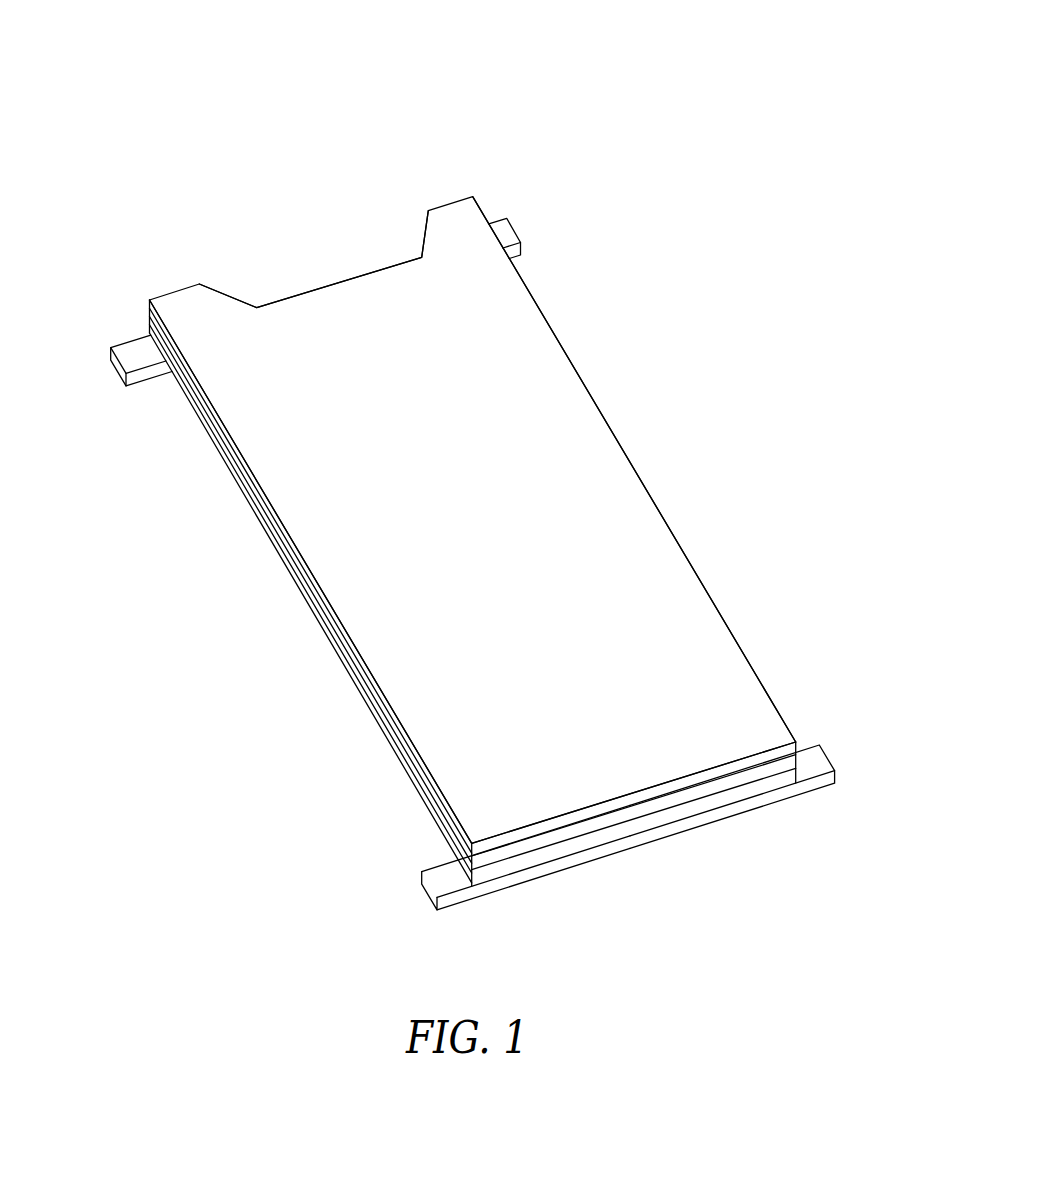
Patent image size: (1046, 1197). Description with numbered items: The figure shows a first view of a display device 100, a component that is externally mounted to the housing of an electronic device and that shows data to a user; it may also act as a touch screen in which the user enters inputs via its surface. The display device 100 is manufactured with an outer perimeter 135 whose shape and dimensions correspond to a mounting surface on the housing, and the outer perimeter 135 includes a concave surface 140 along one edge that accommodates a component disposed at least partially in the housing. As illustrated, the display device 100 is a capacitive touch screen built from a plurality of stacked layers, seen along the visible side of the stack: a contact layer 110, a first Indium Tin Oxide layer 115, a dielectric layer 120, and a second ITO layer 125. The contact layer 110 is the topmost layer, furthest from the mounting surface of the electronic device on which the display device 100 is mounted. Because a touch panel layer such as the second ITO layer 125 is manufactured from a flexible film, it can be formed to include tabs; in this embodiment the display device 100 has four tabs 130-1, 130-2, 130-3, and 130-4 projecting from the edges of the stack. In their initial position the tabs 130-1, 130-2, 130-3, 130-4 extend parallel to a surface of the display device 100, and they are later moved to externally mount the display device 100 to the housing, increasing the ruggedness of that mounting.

The display device 100 is at (573, 90).
The contact layer 110 is at (282, 527).
The first Indium Tin Oxide (ITO) layer 115 is at (352, 658).
The dielectric layer 120 is at (403, 752).
The second ITO layer 125 is at (445, 840).
The tab 130-1 is at (111, 361).
The tab 130-2 is at (514, 229).
The tab 130-3 is at (453, 903).
The tab 130-4 is at (817, 787).
The outer perimeter 135 is at (552, 380).
The concave surface 140 is at (341, 280).